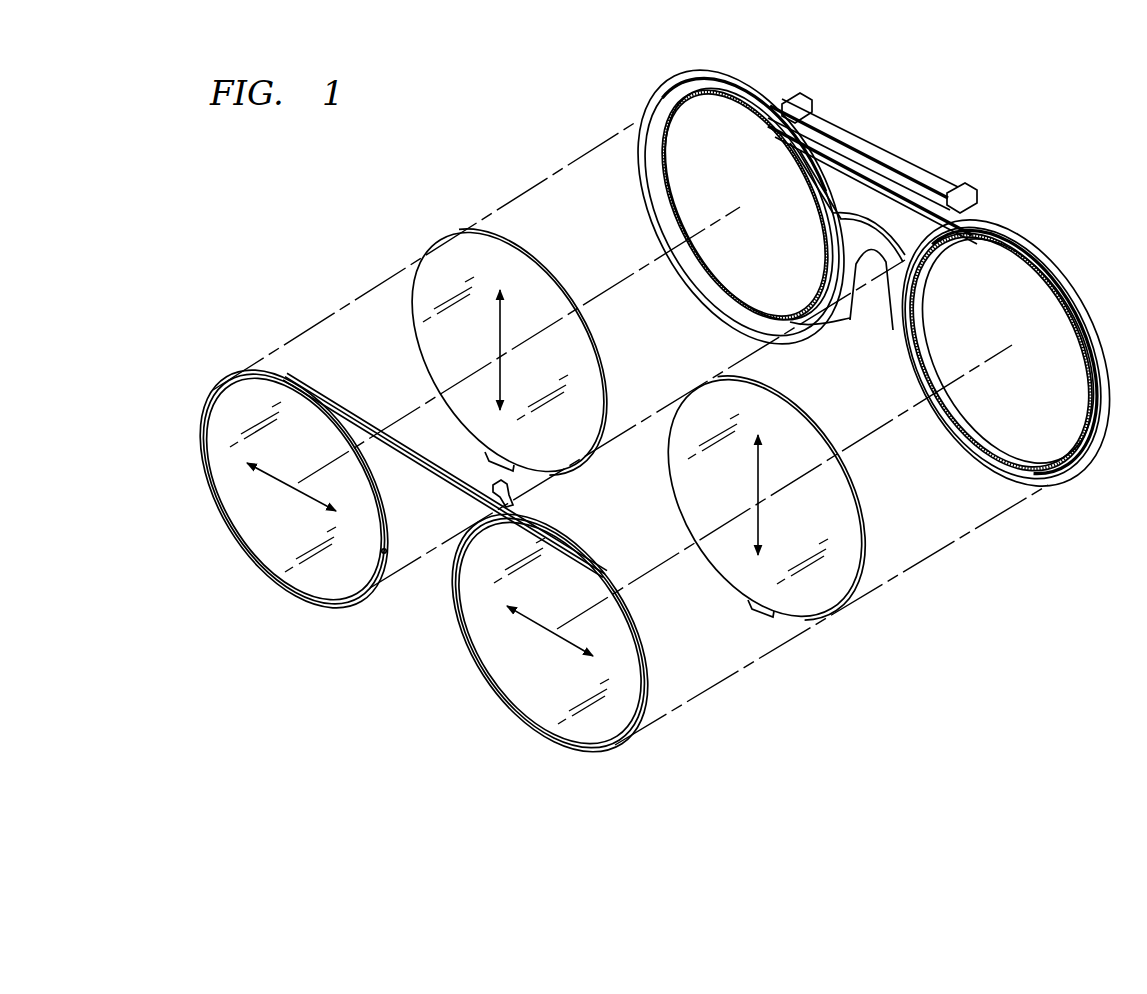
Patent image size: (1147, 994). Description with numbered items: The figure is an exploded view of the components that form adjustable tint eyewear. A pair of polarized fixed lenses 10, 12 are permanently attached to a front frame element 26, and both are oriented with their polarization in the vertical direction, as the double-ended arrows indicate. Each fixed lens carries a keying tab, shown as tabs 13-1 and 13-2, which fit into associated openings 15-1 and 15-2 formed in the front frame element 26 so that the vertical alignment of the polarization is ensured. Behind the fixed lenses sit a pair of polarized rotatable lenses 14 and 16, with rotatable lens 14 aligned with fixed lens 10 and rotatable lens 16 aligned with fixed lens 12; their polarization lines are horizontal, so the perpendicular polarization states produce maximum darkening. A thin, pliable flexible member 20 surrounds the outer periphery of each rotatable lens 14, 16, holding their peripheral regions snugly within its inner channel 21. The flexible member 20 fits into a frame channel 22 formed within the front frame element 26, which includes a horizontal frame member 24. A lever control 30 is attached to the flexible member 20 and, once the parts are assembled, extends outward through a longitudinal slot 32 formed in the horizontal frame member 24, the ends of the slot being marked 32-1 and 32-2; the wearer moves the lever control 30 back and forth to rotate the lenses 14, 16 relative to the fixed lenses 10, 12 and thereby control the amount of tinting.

The polarized fixed lens 10 is at (437, 258).
The polarized fixed lens 12 is at (823, 583).
The tab 13-1 is at (517, 470).
The tab 13-2 is at (753, 606).
The polarized rotatable lens 14 is at (228, 473).
The opening 15-1 is at (740, 307).
The opening 15-2 is at (998, 452).
The polarized rotatable lens 16 is at (555, 700).
The flexible member 20 is at (221, 391).
The inner channel 21 is at (386, 555).
The frame channel 22 is at (650, 176).
The horizontal frame member 24 is at (928, 168).
The front frame element 26 is at (1086, 318).
The lever control 30 is at (490, 482).
The longitudinal opening (slot) 32 is at (862, 164).
The first bar end 32-1 is at (808, 118).
The second bar end 32-2 is at (972, 200).